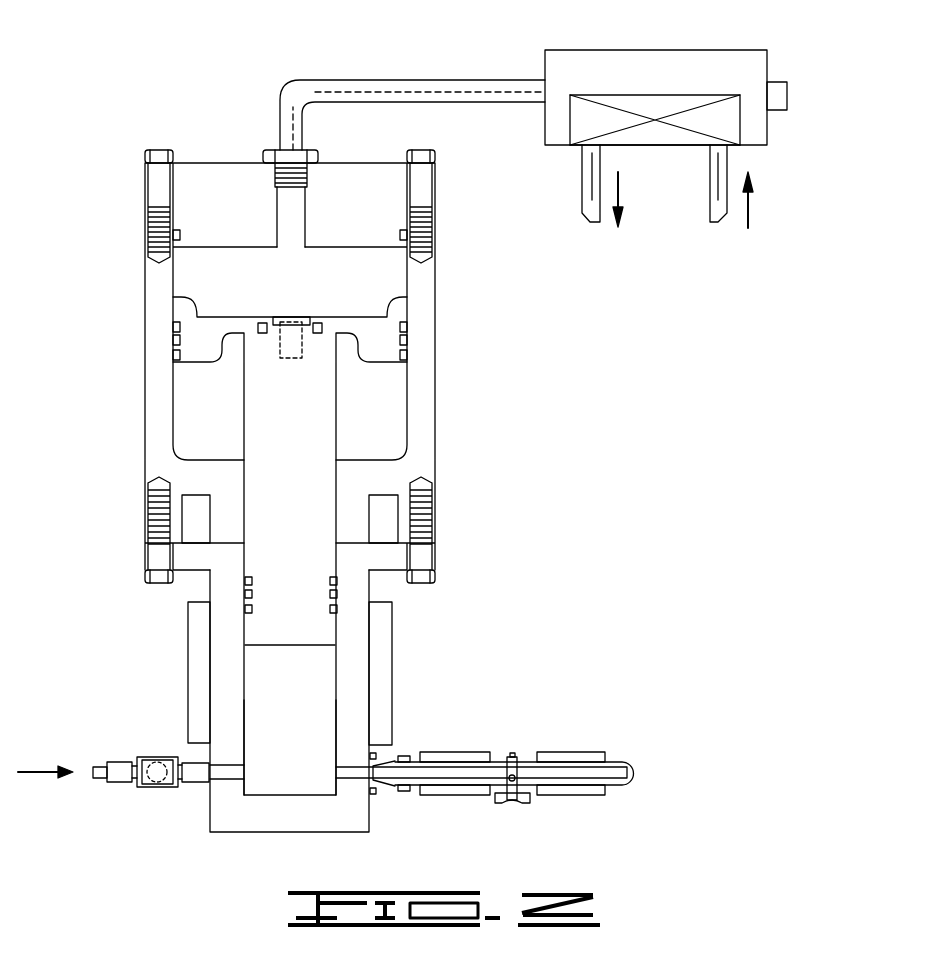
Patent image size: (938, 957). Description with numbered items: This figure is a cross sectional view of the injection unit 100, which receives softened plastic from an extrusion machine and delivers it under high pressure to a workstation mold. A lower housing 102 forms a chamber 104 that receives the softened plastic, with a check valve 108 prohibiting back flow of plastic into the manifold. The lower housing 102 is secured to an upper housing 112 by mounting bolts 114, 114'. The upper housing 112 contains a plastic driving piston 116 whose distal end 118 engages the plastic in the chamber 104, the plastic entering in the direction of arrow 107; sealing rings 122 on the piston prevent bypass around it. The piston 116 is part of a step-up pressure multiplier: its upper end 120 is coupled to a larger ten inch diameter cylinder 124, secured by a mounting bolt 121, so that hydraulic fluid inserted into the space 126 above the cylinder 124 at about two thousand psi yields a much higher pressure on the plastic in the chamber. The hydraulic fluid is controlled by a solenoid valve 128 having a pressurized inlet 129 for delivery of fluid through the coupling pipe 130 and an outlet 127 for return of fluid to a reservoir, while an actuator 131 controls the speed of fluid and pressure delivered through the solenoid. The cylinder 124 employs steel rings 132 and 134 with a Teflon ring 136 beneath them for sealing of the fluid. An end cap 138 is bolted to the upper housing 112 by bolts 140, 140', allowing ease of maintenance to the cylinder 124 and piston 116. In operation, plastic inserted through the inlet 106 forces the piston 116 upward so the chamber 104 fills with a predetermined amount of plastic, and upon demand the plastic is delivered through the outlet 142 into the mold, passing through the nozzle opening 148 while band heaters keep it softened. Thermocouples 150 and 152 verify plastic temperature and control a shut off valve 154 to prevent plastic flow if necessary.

The injection unit 100 is at (500, 492).
The lower housing 102 is at (247, 833).
The chamber 104 is at (298, 787).
The inlet 106 is at (205, 784).
The arrow 107 is at (48, 755).
The check valve 108 is at (150, 788).
The upper housing 112 is at (143, 342).
The mounting bolt 114 is at (472, 536).
The mounting bolt 114' is at (120, 540).
The plastic driving piston 116 is at (317, 438).
The distal end 118 is at (265, 645).
The upper end 120 is at (309, 317).
The mounting bolt 121 is at (296, 317).
The sealing rings 122 is at (337, 612).
The cylinder 124 is at (392, 320).
The space 126 is at (391, 230).
The outlet 127 is at (623, 190).
The solenoid valve 128 is at (637, 50).
The pressurized inlet 129 is at (750, 212).
The coupling pipe 130 is at (292, 98).
The actuator 131 is at (777, 78).
The steel ring 132 is at (408, 327).
The steel ring 134 is at (408, 340).
The Teflon ring 136 is at (408, 355).
The end cap 138 is at (345, 162).
The bolt 140 is at (456, 198).
The bolt 140' is at (119, 184).
The outlet 142 is at (393, 762).
The nozzle opening 148 is at (640, 768).
The thermocouple 150 is at (373, 760).
The thermocouple 152 is at (512, 757).
The shut off valve 154 is at (527, 803).